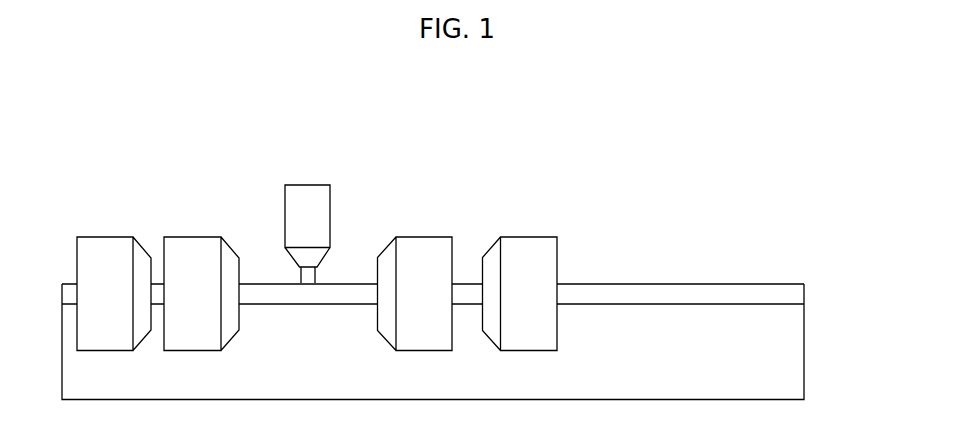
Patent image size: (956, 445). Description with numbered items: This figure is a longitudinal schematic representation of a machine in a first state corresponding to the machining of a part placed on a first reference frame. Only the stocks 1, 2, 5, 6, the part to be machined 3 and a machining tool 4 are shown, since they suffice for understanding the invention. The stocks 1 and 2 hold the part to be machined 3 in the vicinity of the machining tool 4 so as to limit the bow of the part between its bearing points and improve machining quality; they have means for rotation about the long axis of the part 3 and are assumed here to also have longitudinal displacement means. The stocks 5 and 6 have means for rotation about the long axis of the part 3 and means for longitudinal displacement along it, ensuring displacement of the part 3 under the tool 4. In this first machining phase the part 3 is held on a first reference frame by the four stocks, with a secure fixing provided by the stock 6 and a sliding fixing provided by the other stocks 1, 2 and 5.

The stock 1 is at (188, 253).
The stock 2 is at (417, 257).
The part to be machined 3 is at (760, 294).
The machining tool 4 is at (311, 202).
The stock 5 is at (102, 253).
The stock 6 is at (530, 255).